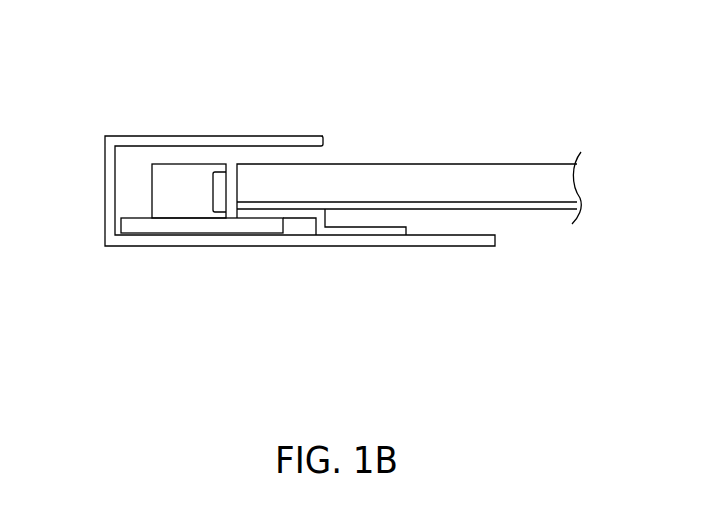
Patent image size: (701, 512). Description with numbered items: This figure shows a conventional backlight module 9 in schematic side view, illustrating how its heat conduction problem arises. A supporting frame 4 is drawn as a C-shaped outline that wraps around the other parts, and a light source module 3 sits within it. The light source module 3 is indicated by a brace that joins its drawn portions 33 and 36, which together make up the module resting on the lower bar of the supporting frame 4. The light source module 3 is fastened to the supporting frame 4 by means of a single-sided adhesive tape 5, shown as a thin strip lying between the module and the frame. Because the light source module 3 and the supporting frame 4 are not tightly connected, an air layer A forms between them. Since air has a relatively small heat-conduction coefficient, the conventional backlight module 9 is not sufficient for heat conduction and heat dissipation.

The backlight module 9 is at (64, 59).
The supporting frame 4 is at (163, 140).
The connector block 36 is at (188, 202).
The base plate 33 is at (143, 227).
The light source module 3 is at (208, 320).
The air layer A is at (250, 233).
The single-sided adhesive tape 5 is at (372, 231).